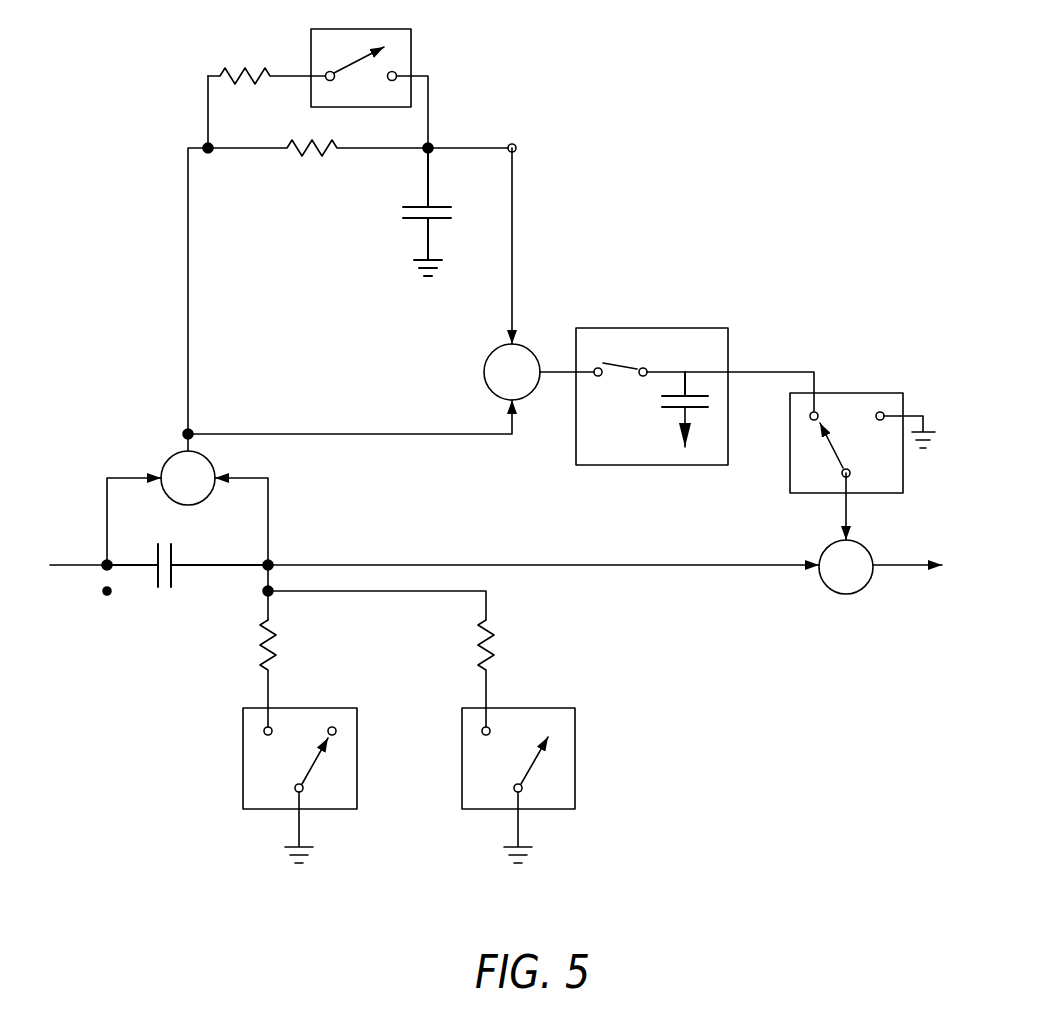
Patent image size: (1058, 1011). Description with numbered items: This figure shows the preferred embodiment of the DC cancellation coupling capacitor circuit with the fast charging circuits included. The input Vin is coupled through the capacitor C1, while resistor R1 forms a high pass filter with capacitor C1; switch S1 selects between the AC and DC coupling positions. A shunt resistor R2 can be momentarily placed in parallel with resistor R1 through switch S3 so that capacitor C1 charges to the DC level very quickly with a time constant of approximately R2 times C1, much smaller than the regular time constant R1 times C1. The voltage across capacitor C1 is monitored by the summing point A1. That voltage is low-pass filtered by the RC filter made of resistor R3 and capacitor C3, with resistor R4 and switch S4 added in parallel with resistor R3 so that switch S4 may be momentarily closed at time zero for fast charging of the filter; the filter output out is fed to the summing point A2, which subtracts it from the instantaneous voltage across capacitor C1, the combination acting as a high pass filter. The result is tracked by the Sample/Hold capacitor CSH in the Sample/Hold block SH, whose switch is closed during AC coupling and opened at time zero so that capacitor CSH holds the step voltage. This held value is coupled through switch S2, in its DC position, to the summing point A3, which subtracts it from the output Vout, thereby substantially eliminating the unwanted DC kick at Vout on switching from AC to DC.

The switch S4 is at (369, 74).
The resistor R4 is at (259, 55).
The resistor R3 is at (318, 163).
The capacitor C3 is at (444, 212).
The output out is at (477, 131).
The summing point A2 is at (530, 371).
The Sample/Hold SH is at (654, 401).
The Sample/Hold capacitor CSH is at (668, 409).
The switch S2 is at (832, 431).
The summing point A3 is at (841, 555).
The output Vout is at (916, 592).
The summing point A1 is at (187, 480).
The capacitor C1 is at (187, 576).
The input Vin is at (83, 586).
The resistor R1 is at (286, 673).
The shunt resistor R2 is at (503, 673).
The switch S1 is at (281, 785).
The switch S3 is at (499, 785).